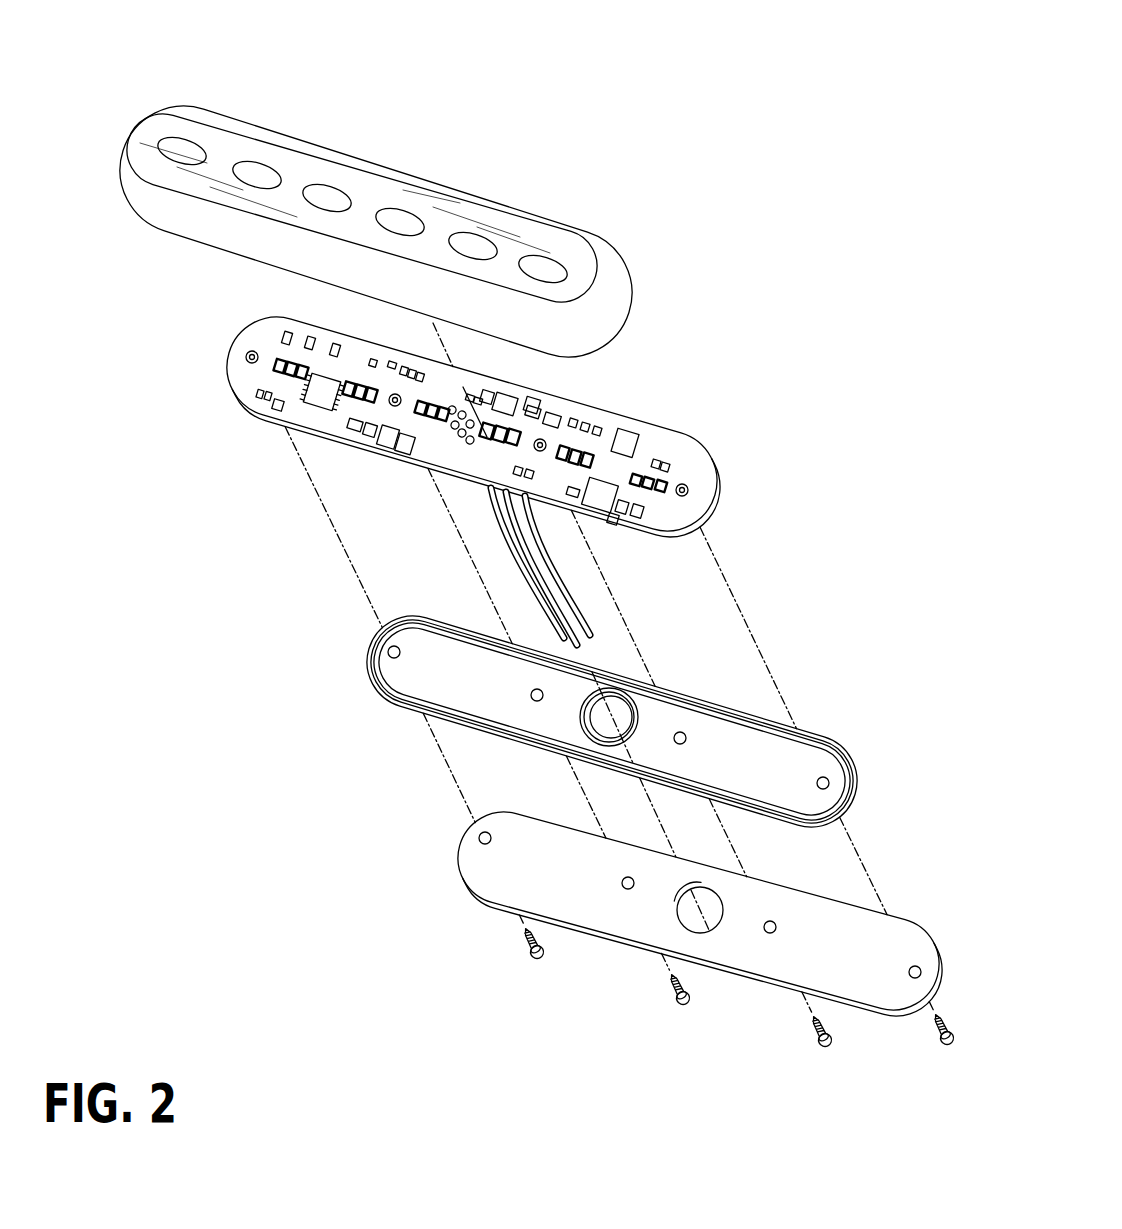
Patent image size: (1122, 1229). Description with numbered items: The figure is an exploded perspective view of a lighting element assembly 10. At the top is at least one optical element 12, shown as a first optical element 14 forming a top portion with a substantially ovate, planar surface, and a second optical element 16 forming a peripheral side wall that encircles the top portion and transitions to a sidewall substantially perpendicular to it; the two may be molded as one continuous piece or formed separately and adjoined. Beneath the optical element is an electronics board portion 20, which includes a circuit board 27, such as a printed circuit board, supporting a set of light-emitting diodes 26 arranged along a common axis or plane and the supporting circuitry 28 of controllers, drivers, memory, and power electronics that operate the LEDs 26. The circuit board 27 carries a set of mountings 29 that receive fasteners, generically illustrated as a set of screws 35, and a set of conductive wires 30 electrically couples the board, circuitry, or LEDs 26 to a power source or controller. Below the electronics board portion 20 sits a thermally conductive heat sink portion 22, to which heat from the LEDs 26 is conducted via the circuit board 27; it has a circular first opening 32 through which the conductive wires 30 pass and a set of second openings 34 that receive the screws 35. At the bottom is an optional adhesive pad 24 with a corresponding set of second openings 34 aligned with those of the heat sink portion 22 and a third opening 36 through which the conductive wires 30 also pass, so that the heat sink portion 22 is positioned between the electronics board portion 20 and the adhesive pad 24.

The lighting element assembly 10 is at (645, 28).
The optical element 12 is at (700, 252).
The first optical element 14 is at (315, 165).
The second optical element 16 is at (611, 274).
The electronics board portion 20 is at (737, 509).
The light-emitting diodes 26 is at (661, 476).
The circuit board 27 is at (693, 462).
The supporting circuitry 28 is at (598, 492).
The mountings 29 is at (392, 394).
The conductive wires 30 is at (580, 565).
The first opening 32 is at (620, 697).
The second openings 34 is at (820, 780).
The heat sink portion 22 is at (838, 718).
The adhesive pad 24 is at (891, 867).
The screws 35 is at (528, 957).
The third opening 36 is at (683, 926).